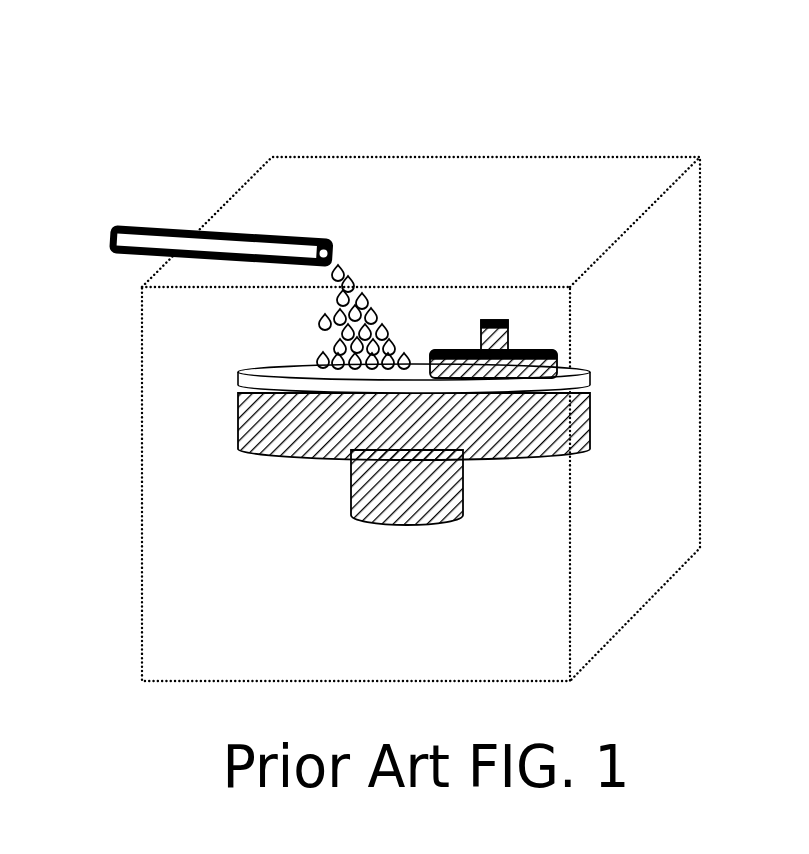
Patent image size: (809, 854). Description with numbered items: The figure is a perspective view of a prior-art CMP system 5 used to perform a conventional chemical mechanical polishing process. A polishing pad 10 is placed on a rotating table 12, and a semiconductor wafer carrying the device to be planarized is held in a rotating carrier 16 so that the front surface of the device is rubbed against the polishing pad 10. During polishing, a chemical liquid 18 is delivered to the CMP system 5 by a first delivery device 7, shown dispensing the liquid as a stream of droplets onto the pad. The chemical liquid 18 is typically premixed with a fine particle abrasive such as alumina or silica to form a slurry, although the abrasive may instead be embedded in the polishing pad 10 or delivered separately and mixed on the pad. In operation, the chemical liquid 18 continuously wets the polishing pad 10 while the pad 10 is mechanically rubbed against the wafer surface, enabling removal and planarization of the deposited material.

The CMP system 5 is at (403, 637).
The first delivery device 7 is at (187, 234).
The polishing pad 10 is at (597, 380).
The rotating table 12 is at (594, 428).
The rotating carrier 16 is at (528, 346).
The chemical liquid 18 is at (366, 294).